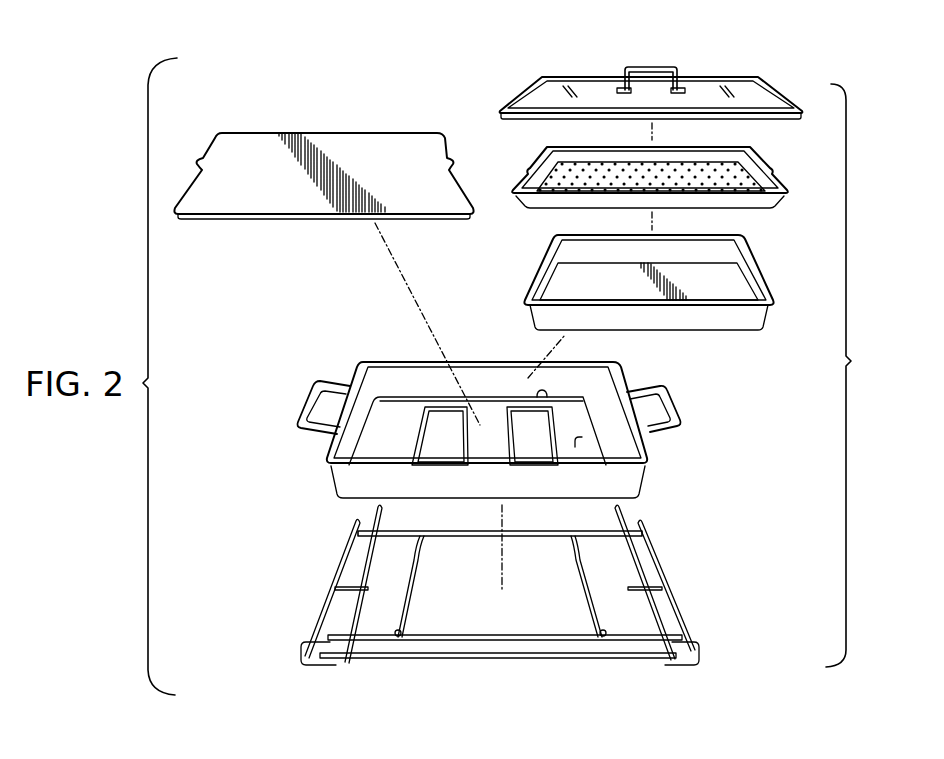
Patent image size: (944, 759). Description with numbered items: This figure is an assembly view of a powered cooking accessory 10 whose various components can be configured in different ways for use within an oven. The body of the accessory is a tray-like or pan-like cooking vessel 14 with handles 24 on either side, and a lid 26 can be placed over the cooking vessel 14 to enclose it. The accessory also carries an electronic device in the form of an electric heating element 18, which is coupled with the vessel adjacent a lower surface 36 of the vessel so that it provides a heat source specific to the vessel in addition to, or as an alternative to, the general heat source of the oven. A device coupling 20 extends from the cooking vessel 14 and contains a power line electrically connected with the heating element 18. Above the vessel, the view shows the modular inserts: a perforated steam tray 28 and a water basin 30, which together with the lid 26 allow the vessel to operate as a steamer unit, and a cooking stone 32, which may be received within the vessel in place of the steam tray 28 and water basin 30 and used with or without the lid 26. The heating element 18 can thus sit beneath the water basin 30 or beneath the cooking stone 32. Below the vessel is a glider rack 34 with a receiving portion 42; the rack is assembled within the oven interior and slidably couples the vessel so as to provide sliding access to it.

The powered cooking accessory 10 is at (853, 375).
The cooking vessel 14 is at (630, 482).
The electric heating element 18 is at (383, 403).
The device coupling 20 is at (576, 358).
The handles 24 is at (307, 408).
The lid 26 is at (757, 95).
The perforated steam tray 28 is at (747, 167).
The water basin 30 is at (725, 277).
The cooking stone 32 is at (360, 152).
The glider rack 34 is at (642, 588).
The lower surface 36 is at (580, 447).
The receiving portion 42 is at (412, 605).